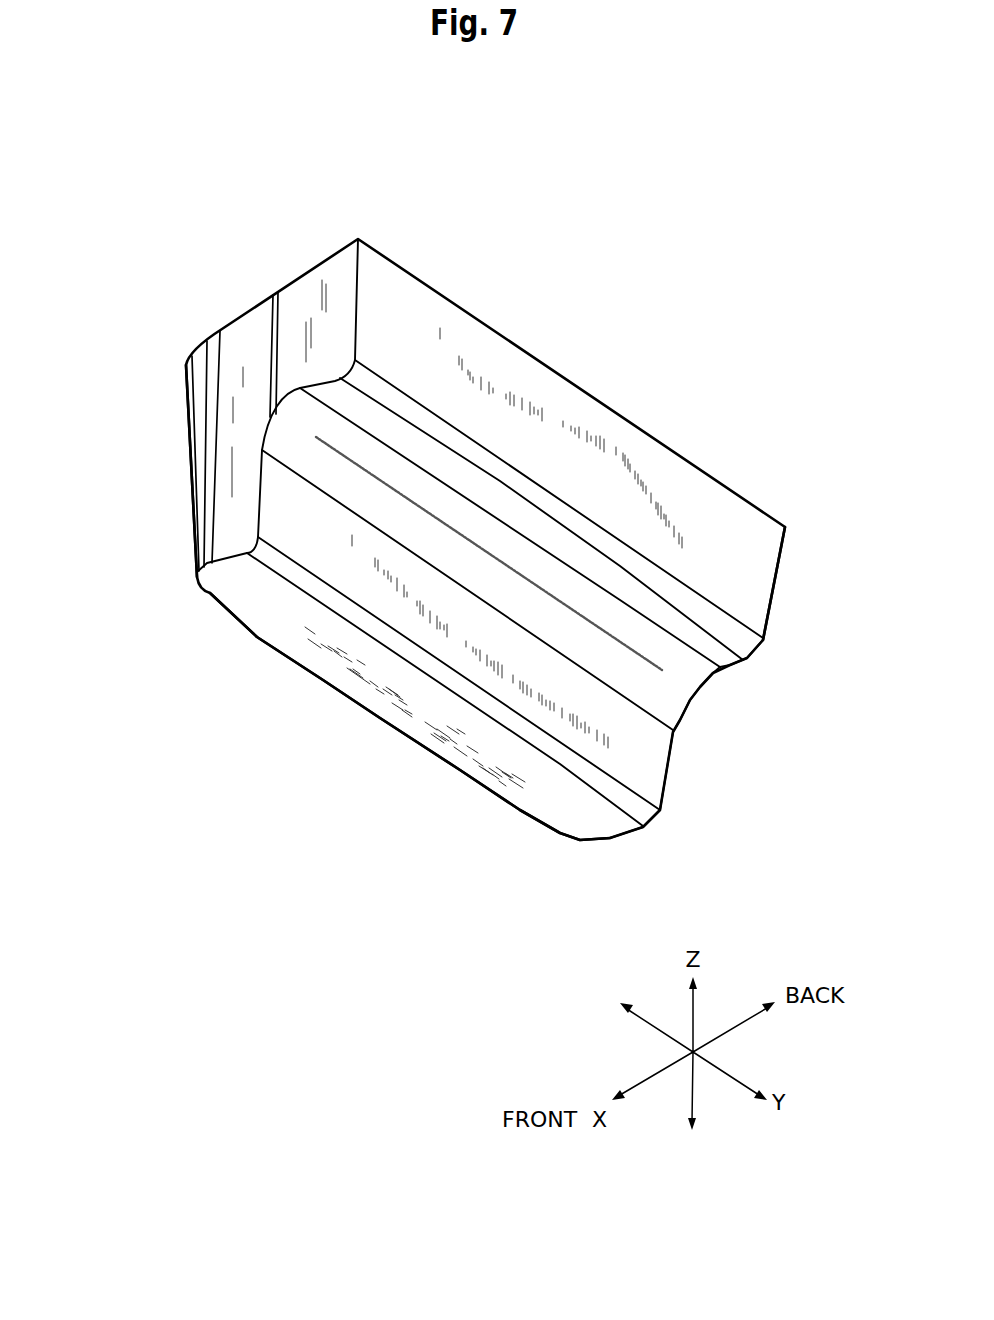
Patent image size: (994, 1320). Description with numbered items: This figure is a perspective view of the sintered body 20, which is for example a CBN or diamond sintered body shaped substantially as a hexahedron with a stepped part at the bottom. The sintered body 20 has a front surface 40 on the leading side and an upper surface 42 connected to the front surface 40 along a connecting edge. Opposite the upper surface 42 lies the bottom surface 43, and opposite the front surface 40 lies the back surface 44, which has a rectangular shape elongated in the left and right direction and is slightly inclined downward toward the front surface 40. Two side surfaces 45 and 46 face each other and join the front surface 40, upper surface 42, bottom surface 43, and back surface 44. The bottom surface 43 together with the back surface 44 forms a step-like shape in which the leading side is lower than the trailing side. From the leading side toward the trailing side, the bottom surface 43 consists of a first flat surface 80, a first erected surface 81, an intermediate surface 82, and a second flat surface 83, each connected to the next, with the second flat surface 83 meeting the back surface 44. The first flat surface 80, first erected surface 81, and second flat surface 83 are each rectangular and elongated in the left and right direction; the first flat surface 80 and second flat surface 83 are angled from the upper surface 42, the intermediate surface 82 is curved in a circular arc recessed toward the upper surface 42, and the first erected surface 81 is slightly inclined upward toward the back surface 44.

The sintered body 20 is at (542, 363).
The front surface 40 is at (188, 467).
The upper surface 42 is at (242, 314).
The bottom surface 43 is at (417, 722).
The back surface 44 is at (672, 468).
The side surface 45 is at (300, 295).
The side surface 46 is at (782, 568).
The first flat surface 80 is at (587, 813).
The first erected surface 81 is at (647, 760).
The intermediate surface 82 is at (672, 683).
The second flat surface 83 is at (722, 647).